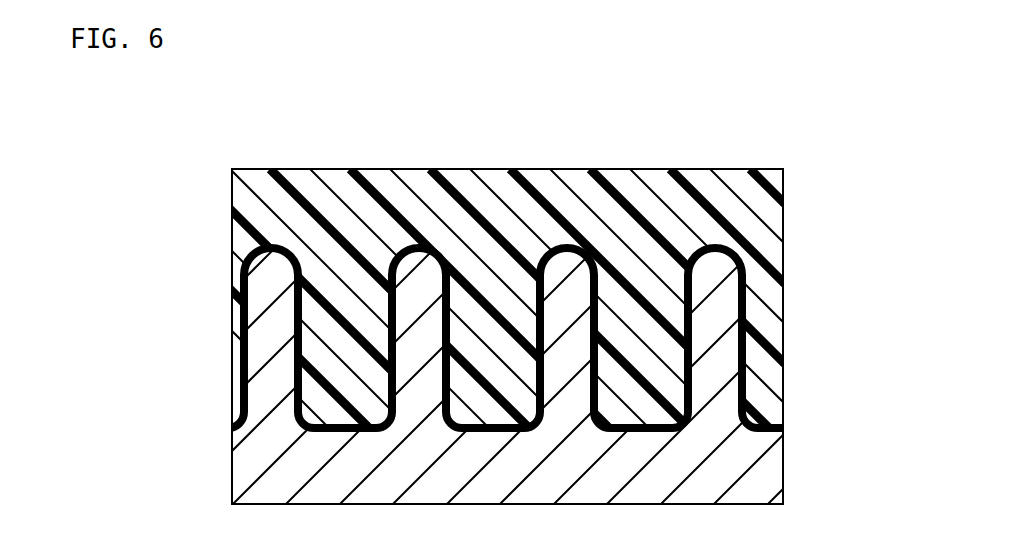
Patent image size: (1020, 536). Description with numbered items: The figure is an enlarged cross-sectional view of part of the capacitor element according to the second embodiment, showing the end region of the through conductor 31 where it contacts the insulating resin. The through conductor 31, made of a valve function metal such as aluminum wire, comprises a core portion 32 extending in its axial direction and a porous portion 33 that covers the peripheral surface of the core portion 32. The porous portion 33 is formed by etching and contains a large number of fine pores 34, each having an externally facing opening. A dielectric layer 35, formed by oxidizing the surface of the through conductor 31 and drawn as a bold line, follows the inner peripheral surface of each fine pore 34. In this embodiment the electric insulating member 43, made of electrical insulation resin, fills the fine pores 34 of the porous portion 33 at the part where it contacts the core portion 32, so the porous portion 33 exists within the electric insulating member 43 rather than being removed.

The through conductor 31 is at (788, 473).
The core portion 32 is at (220, 423).
The porous portion 33 is at (220, 243).
The fine pore 34 is at (303, 318).
The dielectric layer 35 is at (760, 304).
The electric insulating member 43 is at (775, 218).